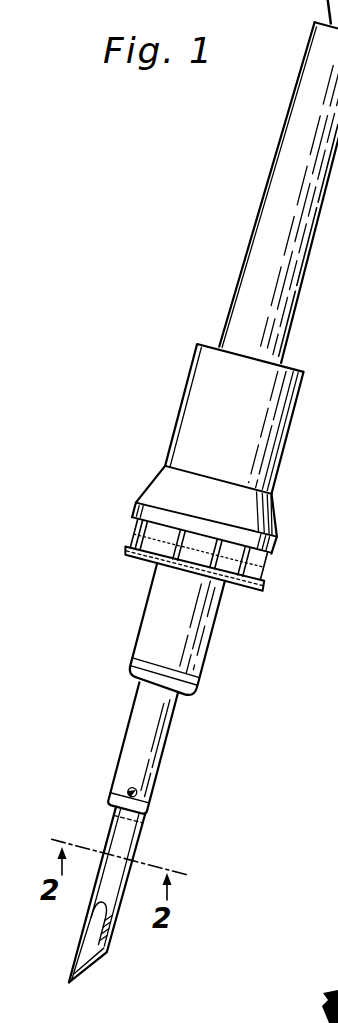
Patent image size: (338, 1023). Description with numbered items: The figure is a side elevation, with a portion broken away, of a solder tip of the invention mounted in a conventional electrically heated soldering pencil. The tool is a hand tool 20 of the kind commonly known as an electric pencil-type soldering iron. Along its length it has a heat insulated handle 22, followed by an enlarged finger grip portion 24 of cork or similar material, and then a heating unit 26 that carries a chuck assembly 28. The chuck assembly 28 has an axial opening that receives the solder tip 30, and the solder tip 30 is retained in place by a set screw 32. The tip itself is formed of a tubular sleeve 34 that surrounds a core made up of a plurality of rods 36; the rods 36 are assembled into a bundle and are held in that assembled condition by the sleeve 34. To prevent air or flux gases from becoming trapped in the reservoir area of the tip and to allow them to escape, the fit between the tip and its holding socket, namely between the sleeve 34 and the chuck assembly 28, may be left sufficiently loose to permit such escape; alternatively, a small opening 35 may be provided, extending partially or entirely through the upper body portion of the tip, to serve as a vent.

The hand tool 20 is at (226, 137).
The heat insulated handle 22 is at (250, 237).
The enlarged finger grip portion 24 is at (183, 407).
The heating unit 26 is at (145, 605).
The chuck assembly 28 is at (130, 735).
The solder tip 30 is at (101, 834).
The set screw 32 is at (140, 790).
The tubular sleeve 34 is at (112, 937).
The small opening 35 is at (118, 817).
The rods 36 is at (82, 982).